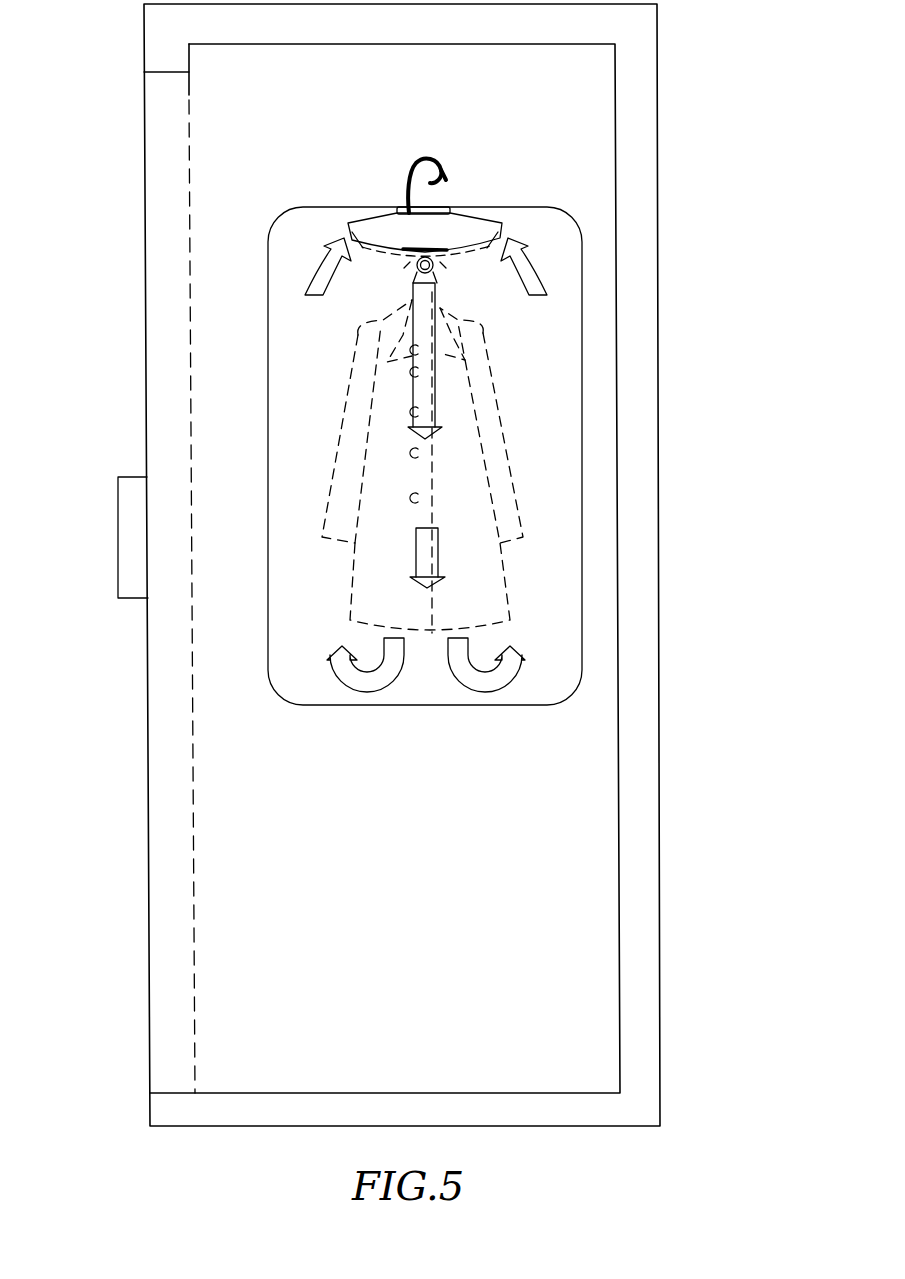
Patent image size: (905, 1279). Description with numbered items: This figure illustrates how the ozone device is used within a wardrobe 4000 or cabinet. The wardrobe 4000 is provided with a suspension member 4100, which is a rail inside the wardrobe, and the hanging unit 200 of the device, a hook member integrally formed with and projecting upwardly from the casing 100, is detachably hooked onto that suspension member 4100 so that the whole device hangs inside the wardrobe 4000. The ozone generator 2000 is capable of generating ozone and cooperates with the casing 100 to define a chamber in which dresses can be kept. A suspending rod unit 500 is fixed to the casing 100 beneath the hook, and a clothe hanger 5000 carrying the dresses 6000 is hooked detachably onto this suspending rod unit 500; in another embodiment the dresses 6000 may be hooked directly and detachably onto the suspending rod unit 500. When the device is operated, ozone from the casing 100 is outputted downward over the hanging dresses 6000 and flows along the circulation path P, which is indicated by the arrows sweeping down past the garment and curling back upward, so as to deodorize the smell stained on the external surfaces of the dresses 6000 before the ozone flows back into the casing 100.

The wardrobe 4000 is at (598, 110).
The ozone generator 2000 is at (412, 180).
The suspension member 4100 is at (449, 159).
The hanging unit 200 is at (441, 164).
The casing 100 is at (478, 230).
The suspending rod unit 500 is at (436, 276).
The clothe hanger 5000 is at (418, 279).
The dresses 6000 is at (503, 428).
The circulation path P is at (438, 568).